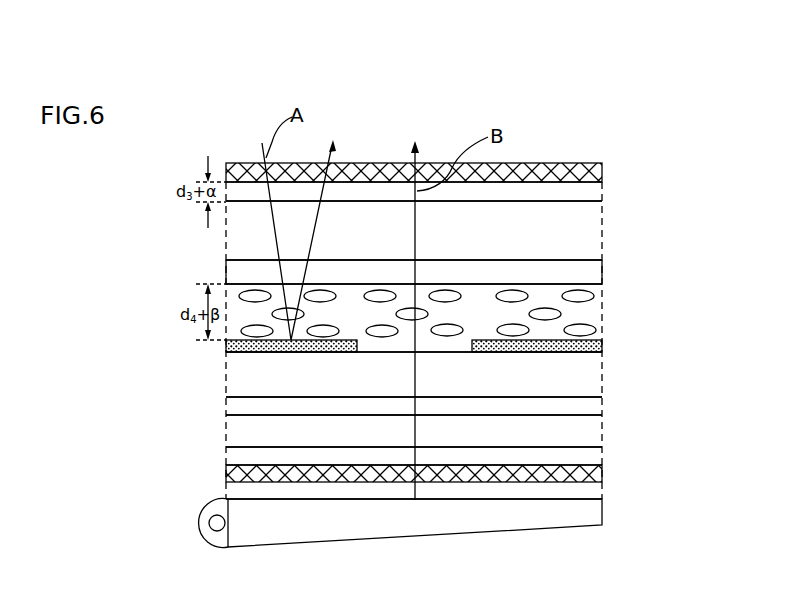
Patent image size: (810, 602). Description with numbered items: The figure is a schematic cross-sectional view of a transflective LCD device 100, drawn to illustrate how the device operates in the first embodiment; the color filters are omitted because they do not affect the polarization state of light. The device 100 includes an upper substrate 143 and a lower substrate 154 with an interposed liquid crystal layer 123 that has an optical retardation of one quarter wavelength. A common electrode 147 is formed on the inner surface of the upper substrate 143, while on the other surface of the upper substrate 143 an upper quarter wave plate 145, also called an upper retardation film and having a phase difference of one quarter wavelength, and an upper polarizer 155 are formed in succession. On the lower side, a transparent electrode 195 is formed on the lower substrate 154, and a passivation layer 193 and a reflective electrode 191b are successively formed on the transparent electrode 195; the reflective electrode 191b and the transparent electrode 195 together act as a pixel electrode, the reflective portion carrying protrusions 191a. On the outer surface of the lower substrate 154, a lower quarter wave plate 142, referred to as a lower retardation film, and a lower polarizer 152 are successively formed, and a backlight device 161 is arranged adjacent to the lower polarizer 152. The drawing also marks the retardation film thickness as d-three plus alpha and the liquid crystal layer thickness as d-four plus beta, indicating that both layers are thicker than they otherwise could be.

The transflective LCD device 100 is at (606, 94).
The upper polarizer 155 is at (600, 166).
The upper quarter wave plate 145 is at (597, 190).
The upper substrate 143 is at (597, 242).
The common electrode 147 is at (597, 270).
The liquid crystal layer 123 is at (598, 310).
The protrusions 191a is at (455, 336).
The reflective electrode 191b is at (598, 350).
The passivation layer 193 is at (598, 383).
The transparent electrode 195 is at (598, 410).
The lower substrate 154 is at (598, 432).
The lower quarter wave plate 142 is at (598, 458).
The lower polarizer 152 is at (598, 484).
The backlight device 161 is at (598, 512).